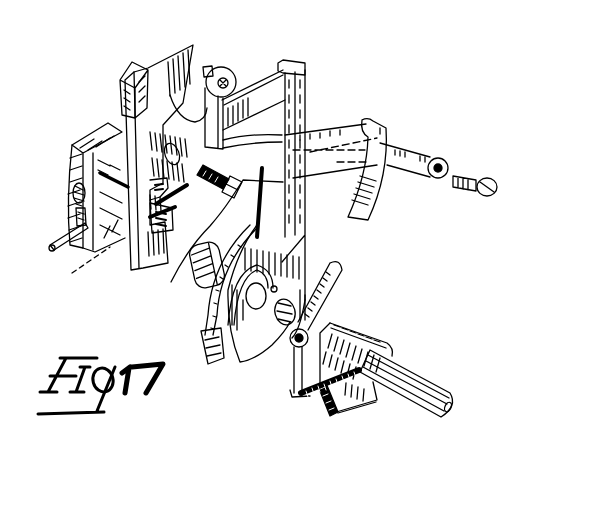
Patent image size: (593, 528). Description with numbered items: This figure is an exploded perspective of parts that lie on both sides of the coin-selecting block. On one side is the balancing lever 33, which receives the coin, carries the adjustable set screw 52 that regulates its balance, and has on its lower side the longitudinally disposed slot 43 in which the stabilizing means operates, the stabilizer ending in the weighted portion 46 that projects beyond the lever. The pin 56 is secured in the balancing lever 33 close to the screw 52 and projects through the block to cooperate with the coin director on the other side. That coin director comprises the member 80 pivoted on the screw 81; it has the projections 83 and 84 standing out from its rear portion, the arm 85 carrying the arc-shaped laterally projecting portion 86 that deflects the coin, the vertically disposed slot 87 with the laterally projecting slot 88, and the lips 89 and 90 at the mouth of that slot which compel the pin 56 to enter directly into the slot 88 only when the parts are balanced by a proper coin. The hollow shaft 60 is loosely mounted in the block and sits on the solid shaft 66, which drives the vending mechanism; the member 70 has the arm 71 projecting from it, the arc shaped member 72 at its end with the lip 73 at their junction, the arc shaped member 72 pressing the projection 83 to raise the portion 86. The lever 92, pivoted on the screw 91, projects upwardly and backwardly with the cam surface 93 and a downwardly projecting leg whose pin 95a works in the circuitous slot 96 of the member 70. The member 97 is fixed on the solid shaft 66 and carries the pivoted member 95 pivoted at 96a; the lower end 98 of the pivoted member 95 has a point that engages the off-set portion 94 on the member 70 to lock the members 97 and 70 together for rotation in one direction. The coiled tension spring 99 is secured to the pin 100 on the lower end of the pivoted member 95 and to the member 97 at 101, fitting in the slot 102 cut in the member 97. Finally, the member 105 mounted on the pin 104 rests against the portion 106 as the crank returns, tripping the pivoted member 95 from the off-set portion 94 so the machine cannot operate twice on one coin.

The balancing lever 33 is at (88, 132).
The set screw 52 is at (73, 194).
The pin 56 is at (77, 210).
The weighted portion 46 is at (52, 250).
The longitudinally disposed slot 43 is at (82, 271).
The projection 84 is at (143, 237).
The projection 83 is at (142, 66).
The vertically disposed slot 87 is at (158, 170).
The portion 106 is at (183, 102).
The lip 89 is at (157, 199).
The laterally projecting slot 88 is at (186, 213).
The lip 90 is at (160, 225).
The pin 104 is at (213, 66).
The arc shaped member 72 is at (245, 90).
The lip 73 is at (292, 61).
The arm 71 is at (303, 108).
The member 105 is at (230, 133).
The cam surface 93 is at (321, 134).
The arm 85 is at (347, 150).
The laterally projecting portion 86 is at (380, 127).
The lever 92 is at (412, 156).
The screw 91 is at (497, 182).
The screw 81 is at (257, 196).
The off-set portion 94 is at (241, 225).
The hollow shaft 60 is at (208, 262).
The circuitous slot 96 is at (212, 350).
The member 80 is at (216, 240).
The member 70 is at (277, 287).
The solid shaft 66 is at (278, 318).
The pivoted member 95 is at (340, 283).
The pin 95a is at (337, 263).
The pivot 96a is at (309, 333).
The member 97 is at (358, 344).
The lower end 98 is at (296, 400).
The pin 100 is at (294, 406).
The coiled tension spring 99 is at (322, 406).
The slot 102 is at (324, 412).
The spring attachment point 101 is at (372, 406).